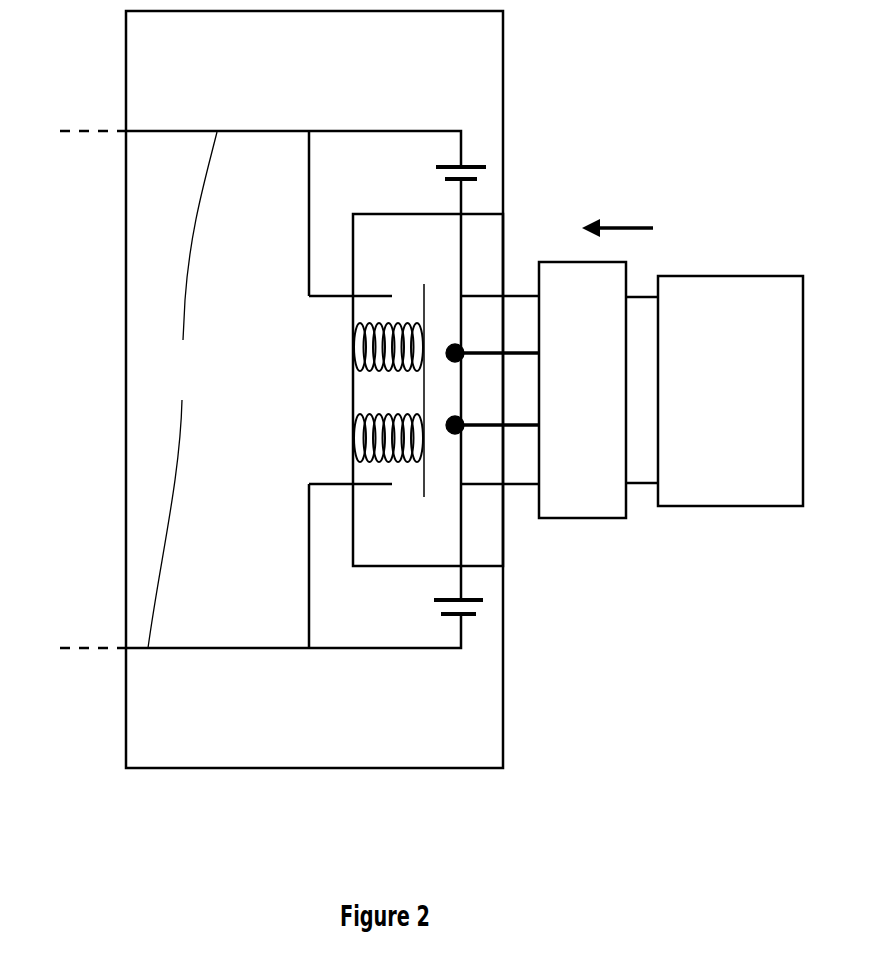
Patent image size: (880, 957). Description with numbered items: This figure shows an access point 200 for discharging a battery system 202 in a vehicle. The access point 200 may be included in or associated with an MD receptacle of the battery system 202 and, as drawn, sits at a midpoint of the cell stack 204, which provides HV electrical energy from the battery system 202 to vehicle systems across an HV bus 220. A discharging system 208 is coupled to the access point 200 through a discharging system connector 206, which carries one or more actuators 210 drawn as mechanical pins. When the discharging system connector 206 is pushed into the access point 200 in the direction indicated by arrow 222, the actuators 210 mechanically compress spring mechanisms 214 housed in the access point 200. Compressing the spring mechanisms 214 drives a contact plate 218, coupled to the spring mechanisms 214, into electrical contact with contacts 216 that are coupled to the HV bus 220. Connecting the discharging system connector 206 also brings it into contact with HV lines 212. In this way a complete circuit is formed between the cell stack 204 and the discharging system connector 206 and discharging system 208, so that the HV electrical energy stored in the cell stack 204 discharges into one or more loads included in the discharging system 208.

The access point 200 is at (380, 279).
The battery system 202 is at (155, 80).
The cell stack 204 is at (461, 163).
The discharging system connector 206 is at (570, 453).
The discharging system 208 is at (717, 419).
The actuators 210 is at (518, 295).
The HV lines 212 is at (468, 343).
The spring mechanisms 214 is at (353, 424).
The contacts 216 is at (392, 297).
The contact plate 218 is at (422, 496).
The HV bus 220 is at (182, 390).
The arrow 222 is at (625, 226).